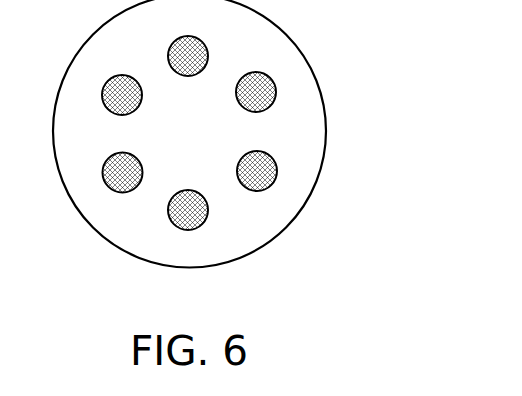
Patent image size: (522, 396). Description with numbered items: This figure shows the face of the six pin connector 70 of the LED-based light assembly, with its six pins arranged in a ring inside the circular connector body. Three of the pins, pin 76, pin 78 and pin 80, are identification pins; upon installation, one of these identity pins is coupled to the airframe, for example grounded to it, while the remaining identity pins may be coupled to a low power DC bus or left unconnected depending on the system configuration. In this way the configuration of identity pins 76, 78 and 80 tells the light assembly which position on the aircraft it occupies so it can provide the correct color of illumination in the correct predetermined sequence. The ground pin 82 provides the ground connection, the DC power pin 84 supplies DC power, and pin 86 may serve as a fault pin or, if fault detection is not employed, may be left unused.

The 6 pin connector 70 is at (327, 130).
The identification pin 76 is at (135, 79).
The identification pin 78 is at (188, 76).
The identification pin 80 is at (253, 72).
The ground pin 82 is at (187, 192).
The DC power pin 84 is at (253, 191).
The fault pin 86 is at (128, 192).